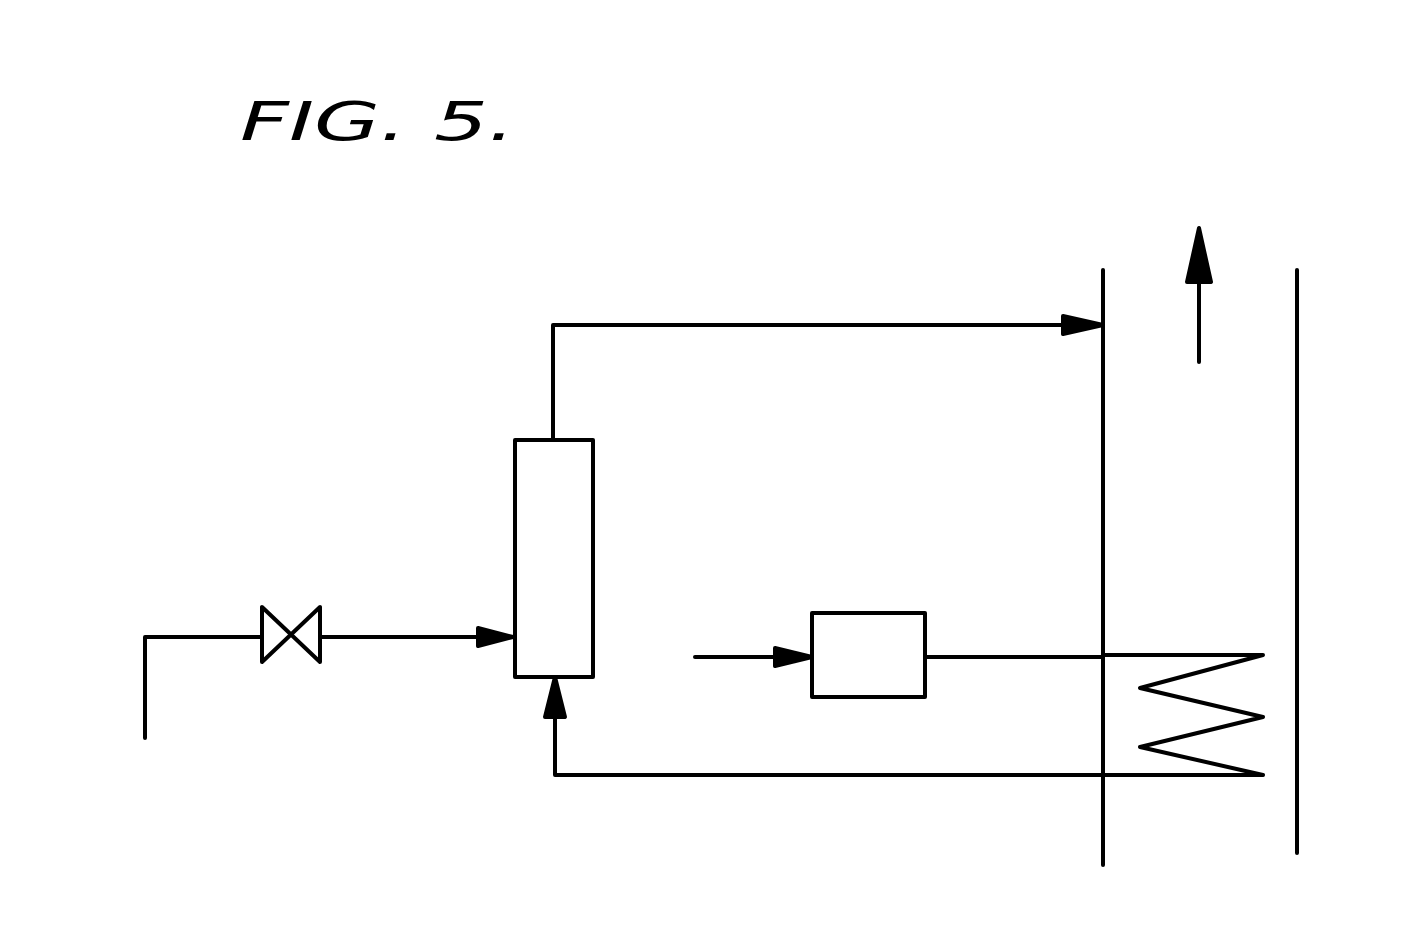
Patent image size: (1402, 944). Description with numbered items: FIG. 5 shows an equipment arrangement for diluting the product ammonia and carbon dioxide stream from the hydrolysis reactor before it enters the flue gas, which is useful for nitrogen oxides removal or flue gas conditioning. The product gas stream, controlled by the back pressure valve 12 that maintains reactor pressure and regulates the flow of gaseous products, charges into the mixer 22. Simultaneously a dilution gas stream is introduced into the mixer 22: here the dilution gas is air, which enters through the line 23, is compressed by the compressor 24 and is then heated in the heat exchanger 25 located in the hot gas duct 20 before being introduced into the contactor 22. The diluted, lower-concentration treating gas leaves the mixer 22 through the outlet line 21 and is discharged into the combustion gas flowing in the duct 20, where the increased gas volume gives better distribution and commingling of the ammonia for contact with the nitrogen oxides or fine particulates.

The back pressure valve 12 is at (277, 605).
The hot gas duct 20 is at (1200, 546).
The outlet line 21 is at (828, 322).
The mixer 22 is at (535, 490).
The line 23 is at (733, 657).
The compressor 24 is at (875, 668).
The heat exchanger 25 is at (1200, 663).